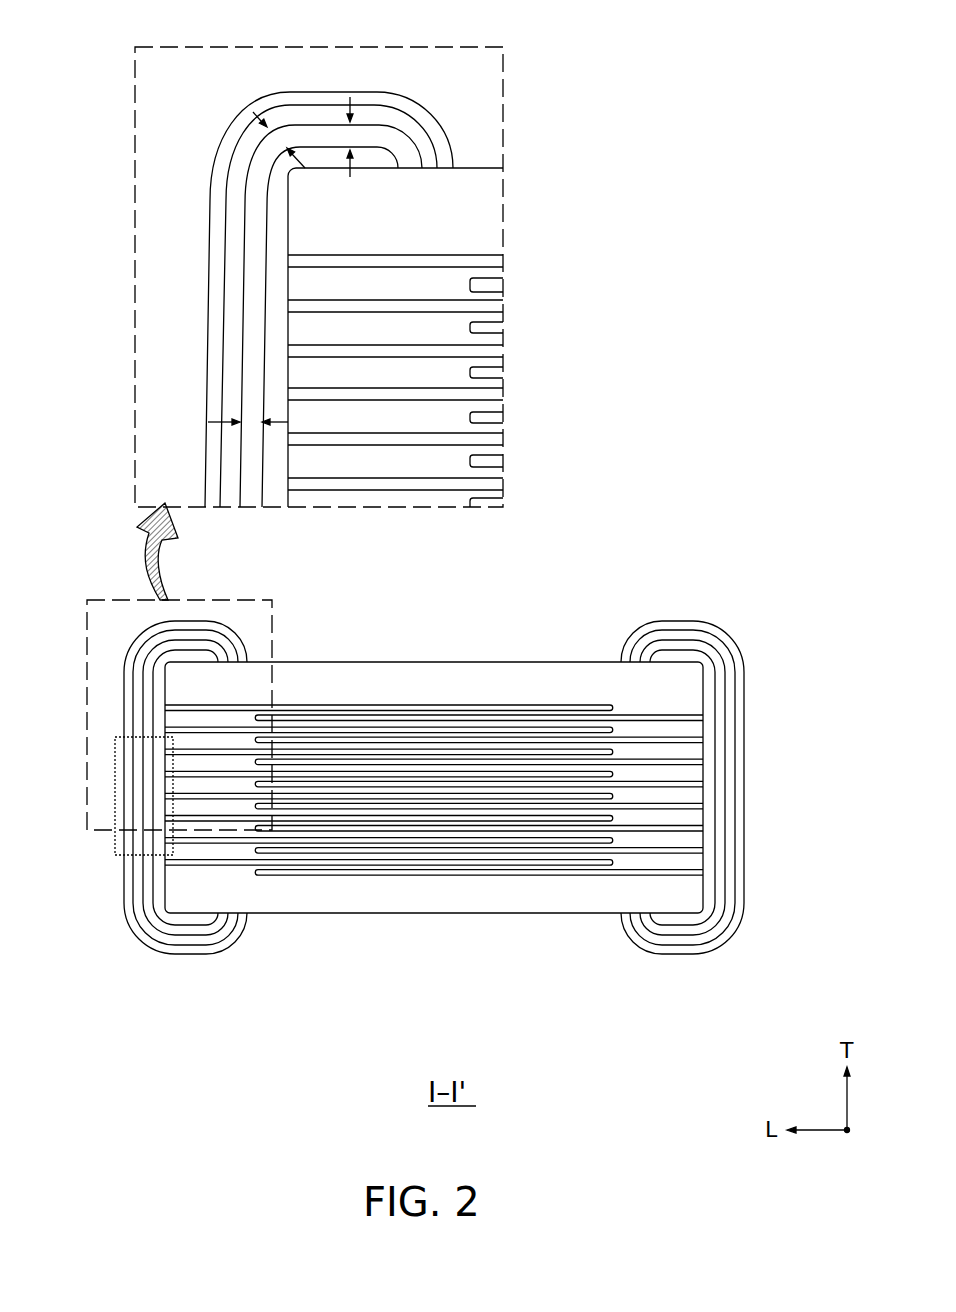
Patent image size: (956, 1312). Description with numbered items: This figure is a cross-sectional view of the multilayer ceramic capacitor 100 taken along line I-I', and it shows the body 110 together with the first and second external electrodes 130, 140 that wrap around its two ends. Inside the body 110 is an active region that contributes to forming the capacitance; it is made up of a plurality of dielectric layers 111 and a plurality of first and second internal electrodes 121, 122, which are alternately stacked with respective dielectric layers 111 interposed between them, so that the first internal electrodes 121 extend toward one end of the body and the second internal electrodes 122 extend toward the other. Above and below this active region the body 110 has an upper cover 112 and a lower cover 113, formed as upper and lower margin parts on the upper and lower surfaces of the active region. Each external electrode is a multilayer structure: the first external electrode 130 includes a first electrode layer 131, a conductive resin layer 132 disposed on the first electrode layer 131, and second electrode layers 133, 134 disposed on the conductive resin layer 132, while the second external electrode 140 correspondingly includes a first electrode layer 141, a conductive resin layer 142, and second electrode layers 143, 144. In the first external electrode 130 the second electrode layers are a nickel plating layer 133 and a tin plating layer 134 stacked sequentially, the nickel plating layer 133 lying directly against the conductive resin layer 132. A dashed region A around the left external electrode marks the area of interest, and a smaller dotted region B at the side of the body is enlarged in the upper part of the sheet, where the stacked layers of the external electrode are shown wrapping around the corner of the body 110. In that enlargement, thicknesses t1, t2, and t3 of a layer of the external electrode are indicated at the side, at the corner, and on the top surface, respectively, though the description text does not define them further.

The multilayer ceramic capacitor 100 is at (376, 558).
The body 110 is at (430, 913).
The dielectric layer 111 is at (410, 713).
The upper cover 112 is at (567, 688).
The lower cover 113 is at (510, 900).
The first internal electrode 121 is at (360, 705).
The second internal electrode 122 is at (448, 720).
The first external electrode 130 is at (183, 845).
The first electrode layer 131 is at (217, 920).
The conductive resin layer 132 is at (202, 932).
The nickel plating layer 133 is at (170, 938).
The tin plating layer 134 is at (166, 823).
The second external electrode 140 is at (691, 845).
The first electrode layer 141 is at (647, 924).
The conductive resin layer 142 is at (670, 934).
The second electrode layer 143 is at (701, 944).
The second electrode layer 144 is at (607, 1025).
The enlarged region A is at (86, 683).
The enlarged region B is at (114, 800).
The thickness t1 of electrode layer t1 is at (248, 420).
The thickness t2 at corner t2 is at (288, 132).
The thickness t3 on top surface t3 is at (358, 137).